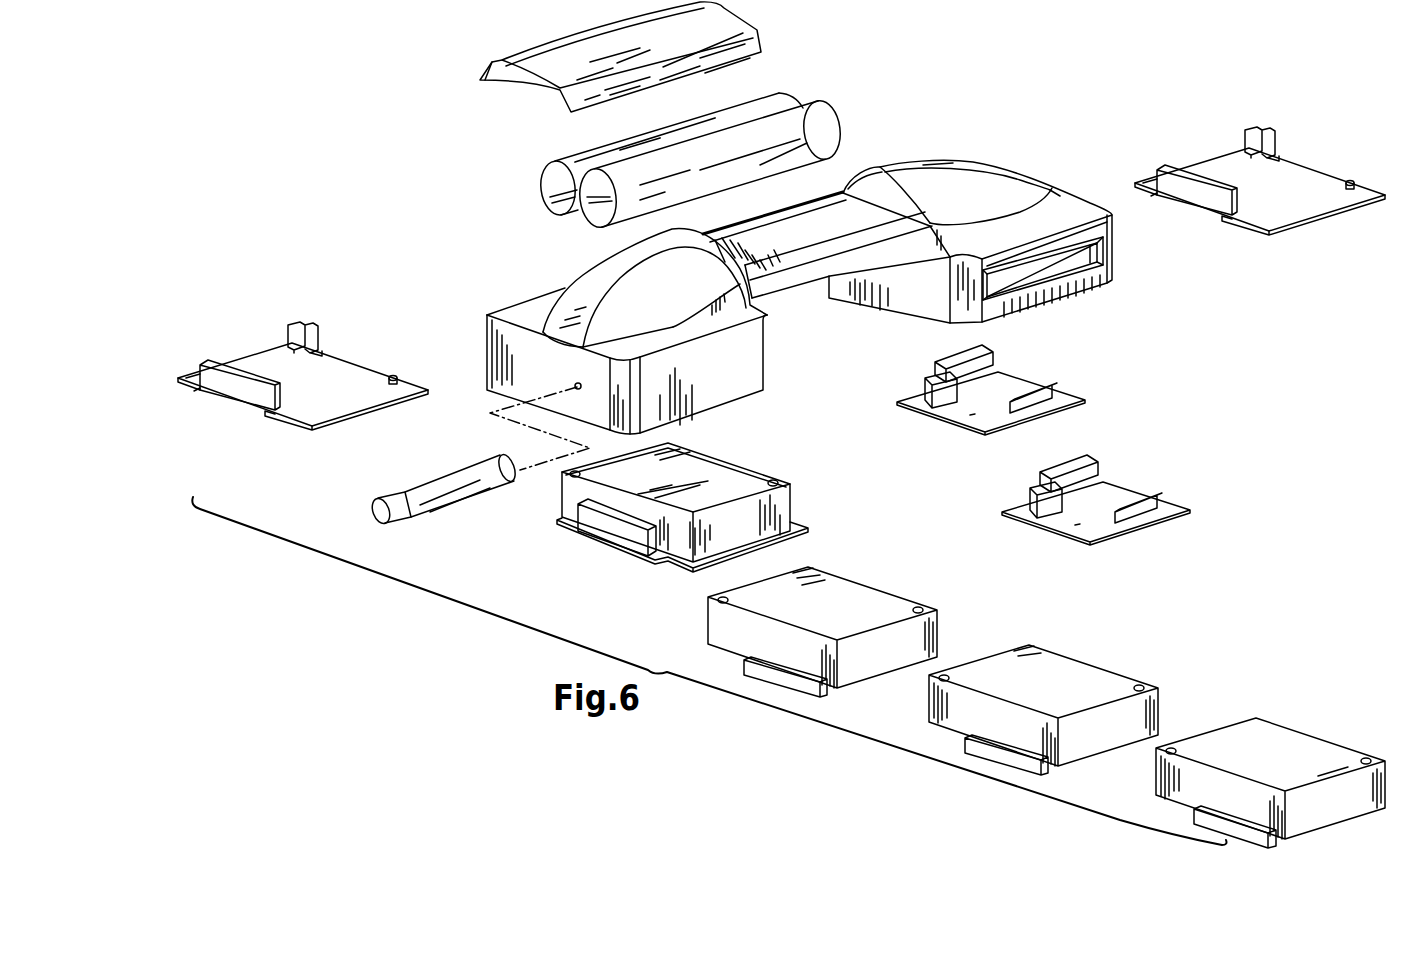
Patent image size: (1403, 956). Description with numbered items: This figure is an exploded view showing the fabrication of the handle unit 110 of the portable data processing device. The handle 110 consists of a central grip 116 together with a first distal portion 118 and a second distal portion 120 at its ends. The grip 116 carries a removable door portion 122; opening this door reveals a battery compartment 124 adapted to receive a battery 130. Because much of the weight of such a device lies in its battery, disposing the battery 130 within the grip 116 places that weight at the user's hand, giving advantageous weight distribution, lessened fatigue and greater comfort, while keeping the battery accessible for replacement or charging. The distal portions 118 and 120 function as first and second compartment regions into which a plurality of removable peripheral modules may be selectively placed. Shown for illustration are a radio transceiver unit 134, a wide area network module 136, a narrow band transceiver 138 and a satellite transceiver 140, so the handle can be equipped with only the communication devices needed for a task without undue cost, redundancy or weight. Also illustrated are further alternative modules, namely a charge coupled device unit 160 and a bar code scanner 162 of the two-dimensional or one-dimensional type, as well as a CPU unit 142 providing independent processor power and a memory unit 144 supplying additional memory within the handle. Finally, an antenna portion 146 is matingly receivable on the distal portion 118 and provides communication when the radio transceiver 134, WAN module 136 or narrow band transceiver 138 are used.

The handle unit 110 is at (1005, 130).
The grip 116 is at (807, 283).
The first distal portion 118 is at (717, 410).
The second distal portion 120 is at (1104, 285).
The removable door portion 122 is at (753, 38).
The battery compartment 124 is at (770, 236).
The battery 130 is at (827, 123).
The radio transceiver unit 134 is at (770, 508).
The wide area network module 136 is at (907, 600).
The narrow band transceiver 138 is at (1090, 660).
The satellite transceiver 140 is at (1273, 723).
The CPU unit 142 is at (352, 412).
The memory unit 144 is at (1335, 217).
The antenna portion 146 is at (423, 512).
The charge coupled device unit 160 is at (1067, 398).
The bar code scanner 162 is at (1122, 495).